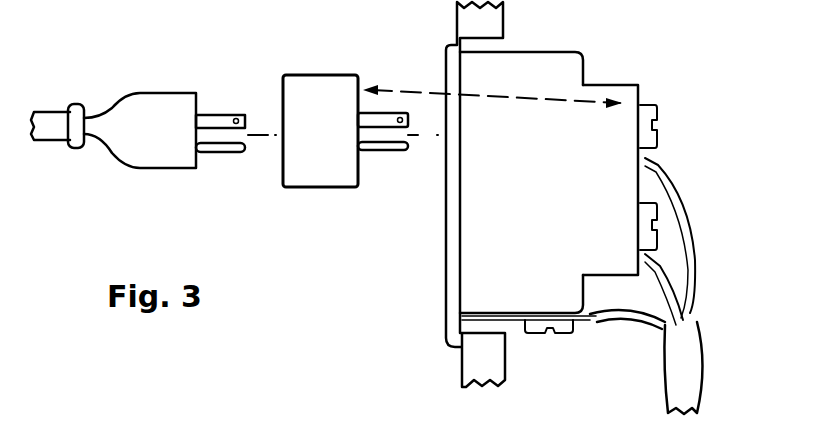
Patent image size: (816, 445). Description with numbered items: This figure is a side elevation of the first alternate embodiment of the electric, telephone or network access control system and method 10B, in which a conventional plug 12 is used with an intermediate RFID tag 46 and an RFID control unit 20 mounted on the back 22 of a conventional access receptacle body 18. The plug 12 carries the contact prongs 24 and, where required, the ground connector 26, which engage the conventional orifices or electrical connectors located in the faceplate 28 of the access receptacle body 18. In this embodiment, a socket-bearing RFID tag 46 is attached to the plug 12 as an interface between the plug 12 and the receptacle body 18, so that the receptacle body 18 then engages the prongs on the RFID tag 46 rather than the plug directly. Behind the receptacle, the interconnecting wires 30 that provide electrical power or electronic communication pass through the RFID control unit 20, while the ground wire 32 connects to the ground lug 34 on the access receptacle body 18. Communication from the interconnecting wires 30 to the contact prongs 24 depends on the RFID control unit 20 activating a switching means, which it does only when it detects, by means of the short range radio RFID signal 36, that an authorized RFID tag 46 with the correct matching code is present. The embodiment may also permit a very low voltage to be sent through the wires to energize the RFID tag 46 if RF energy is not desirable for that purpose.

The electric, telephone or network access control system and method 10B is at (232, 56).
The electrical plug 12 is at (113, 130).
The access receptacle body 18 is at (528, 186).
The RFID control unit 20 is at (626, 177).
The back side 22 is at (584, 72).
The contact prongs 24 is at (214, 112).
The ground connector 26 is at (220, 155).
The faceplate 28 is at (445, 238).
The interconnecting wires 30 is at (672, 268).
The ground wire 32 is at (640, 318).
The ground lug 34 is at (530, 333).
The short range radio RFID signal 36 is at (433, 92).
The intermediate RFID tag 46 is at (300, 74).